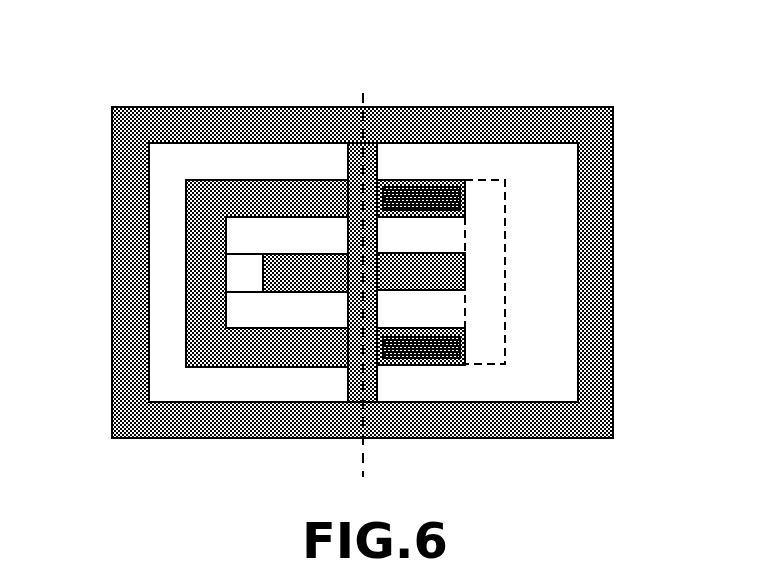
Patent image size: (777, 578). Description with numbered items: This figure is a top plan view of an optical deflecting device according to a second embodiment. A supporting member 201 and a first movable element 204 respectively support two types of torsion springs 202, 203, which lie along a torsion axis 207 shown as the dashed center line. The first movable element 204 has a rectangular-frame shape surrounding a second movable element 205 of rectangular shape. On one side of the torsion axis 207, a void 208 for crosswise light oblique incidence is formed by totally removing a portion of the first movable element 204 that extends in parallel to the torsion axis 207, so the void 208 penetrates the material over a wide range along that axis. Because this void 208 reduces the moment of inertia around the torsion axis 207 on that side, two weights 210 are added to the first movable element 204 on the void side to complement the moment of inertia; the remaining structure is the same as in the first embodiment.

The supporting member 201 is at (587, 128).
The torsion spring 202 is at (348, 163).
The torsion spring 203 is at (348, 240).
The first movable element 204 is at (203, 238).
The second movable element 205 is at (450, 272).
The torsion axis 207 is at (368, 78).
The void 208 is at (485, 310).
The weight 210 is at (437, 197).